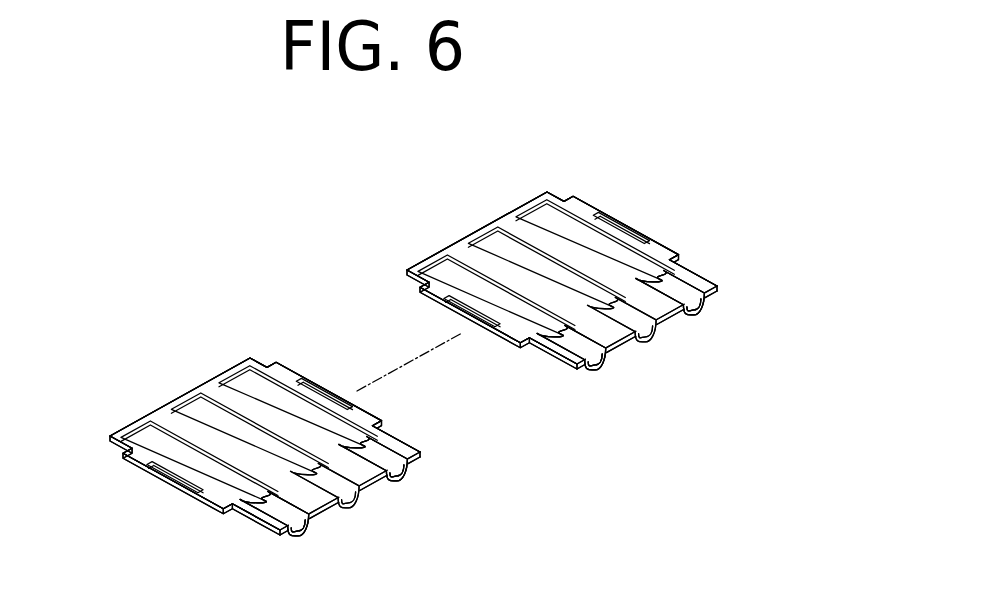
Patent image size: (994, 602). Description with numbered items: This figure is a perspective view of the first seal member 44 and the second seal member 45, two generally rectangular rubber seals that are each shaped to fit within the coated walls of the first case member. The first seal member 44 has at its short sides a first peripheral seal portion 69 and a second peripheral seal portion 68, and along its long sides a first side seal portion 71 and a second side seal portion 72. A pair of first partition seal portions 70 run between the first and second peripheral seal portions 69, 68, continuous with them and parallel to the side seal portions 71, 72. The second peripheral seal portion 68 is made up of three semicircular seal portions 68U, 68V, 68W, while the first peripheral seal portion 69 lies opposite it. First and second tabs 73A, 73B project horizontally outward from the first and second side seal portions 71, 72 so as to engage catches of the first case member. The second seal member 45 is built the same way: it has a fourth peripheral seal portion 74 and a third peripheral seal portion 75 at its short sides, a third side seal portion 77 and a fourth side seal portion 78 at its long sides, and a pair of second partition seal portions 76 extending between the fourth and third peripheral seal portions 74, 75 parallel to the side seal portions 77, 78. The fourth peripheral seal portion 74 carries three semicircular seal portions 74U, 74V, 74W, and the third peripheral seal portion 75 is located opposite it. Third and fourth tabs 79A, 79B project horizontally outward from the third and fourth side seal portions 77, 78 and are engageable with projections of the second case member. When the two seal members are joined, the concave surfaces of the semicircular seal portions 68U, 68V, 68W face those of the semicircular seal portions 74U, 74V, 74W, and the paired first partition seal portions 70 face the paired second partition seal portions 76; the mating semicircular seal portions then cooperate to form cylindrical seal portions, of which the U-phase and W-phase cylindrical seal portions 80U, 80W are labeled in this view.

The first seal member 44 is at (559, 170).
The second seal member 45 is at (117, 379).
The first peripheral seal portion 69 is at (462, 236).
The first partition seal portions 70 is at (548, 268).
The first side seal portion 71 is at (537, 343).
The second side seal portion 72 is at (680, 263).
The first tab 73A is at (444, 307).
The second tab 73B is at (631, 204).
The second peripheral seal portion 68 is at (670, 327).
The semicircular seal portion 68U is at (600, 372).
The semicircular seal portion 68V is at (647, 350).
The semicircular seal portion 68W is at (700, 307).
The cylindrical seal portion 80U is at (431, 430).
The cylindrical seal portion 80W is at (512, 432).
The third peripheral seal portion 75 is at (176, 396).
The second partition seal portions 76 is at (254, 433).
The third side seal portion 77 is at (386, 427).
The fourth side seal portion 78 is at (238, 506).
The third tab 79A is at (320, 385).
The fourth tab 79B is at (155, 474).
The fourth peripheral seal portion 74 is at (382, 478).
The semicircular seal portion 74U is at (408, 470).
The semicircular seal portion 74V is at (352, 501).
The semicircular seal portion 74W is at (310, 529).